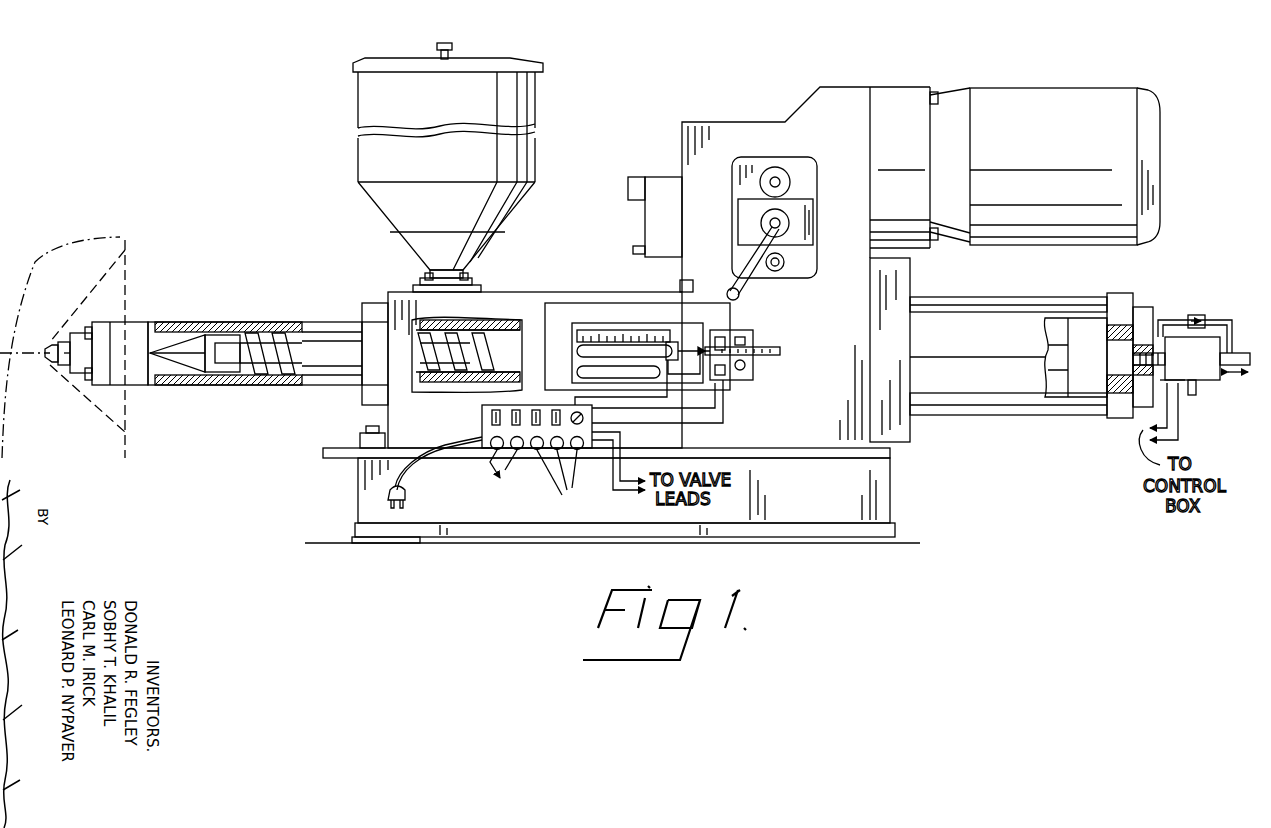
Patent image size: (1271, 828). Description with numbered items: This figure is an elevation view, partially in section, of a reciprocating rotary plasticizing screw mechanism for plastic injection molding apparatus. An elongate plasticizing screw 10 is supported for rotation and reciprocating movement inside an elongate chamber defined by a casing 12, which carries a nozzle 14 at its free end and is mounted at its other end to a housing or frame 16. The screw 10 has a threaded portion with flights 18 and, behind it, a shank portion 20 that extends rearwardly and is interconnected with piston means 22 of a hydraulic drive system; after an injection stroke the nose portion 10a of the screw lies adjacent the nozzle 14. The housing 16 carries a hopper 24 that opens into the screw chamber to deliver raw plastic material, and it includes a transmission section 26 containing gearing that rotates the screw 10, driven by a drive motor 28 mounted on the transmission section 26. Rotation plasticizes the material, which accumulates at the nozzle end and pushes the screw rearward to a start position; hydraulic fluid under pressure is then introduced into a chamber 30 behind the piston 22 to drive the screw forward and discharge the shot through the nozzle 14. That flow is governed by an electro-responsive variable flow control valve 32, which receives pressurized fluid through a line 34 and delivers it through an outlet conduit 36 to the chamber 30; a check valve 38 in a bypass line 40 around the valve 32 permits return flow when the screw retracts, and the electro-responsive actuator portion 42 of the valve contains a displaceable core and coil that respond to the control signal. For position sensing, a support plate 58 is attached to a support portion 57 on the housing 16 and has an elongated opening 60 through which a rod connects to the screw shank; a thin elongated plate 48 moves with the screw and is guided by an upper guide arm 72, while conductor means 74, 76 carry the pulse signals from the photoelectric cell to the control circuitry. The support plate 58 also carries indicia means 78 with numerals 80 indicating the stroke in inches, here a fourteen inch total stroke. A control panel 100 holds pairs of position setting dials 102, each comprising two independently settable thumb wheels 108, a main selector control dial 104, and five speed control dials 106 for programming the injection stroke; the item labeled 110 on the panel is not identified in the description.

The plasticizing screw 10 is at (232, 324).
The nose portion 10a is at (183, 342).
The casing 12 is at (140, 322).
The nozzle 14 is at (56, 336).
The housing or frame 16 is at (370, 414).
The flights 18 is at (298, 345).
The shank portion 20 is at (510, 345).
The piston means 22 is at (1090, 398).
The hopper 24 is at (362, 109).
The transmission section 26 is at (728, 114).
The drive motor 28 is at (1095, 88).
The chamber 30 is at (1120, 320).
The electro-responsive variable flow control valve 32 is at (1195, 366).
The line 34 is at (1240, 352).
The outlet conduit 36 is at (1146, 390).
The check valve 38 is at (1202, 314).
The bypass line 40 is at (1178, 320).
The electro-responsive actuator portion 42 is at (1193, 397).
The elongated plate 48 is at (780, 352).
The support portion 57 is at (556, 310).
The support plate 58 is at (688, 290).
The elongated opening 60 is at (614, 348).
The upper guide arm 72 is at (746, 340).
The conductor means 74 is at (726, 412).
The conductor means 76 is at (714, 400).
The indicia means 78 is at (612, 333).
The numerals 80 is at (580, 373).
The control panel 100 is at (506, 452).
The position setting dials 102 is at (565, 432).
The main selector control dial 104 is at (585, 416).
The speed control dials 106 is at (505, 472).
The thumb wheels 108 is at (536, 412).
The terminal posts 110 is at (560, 432).